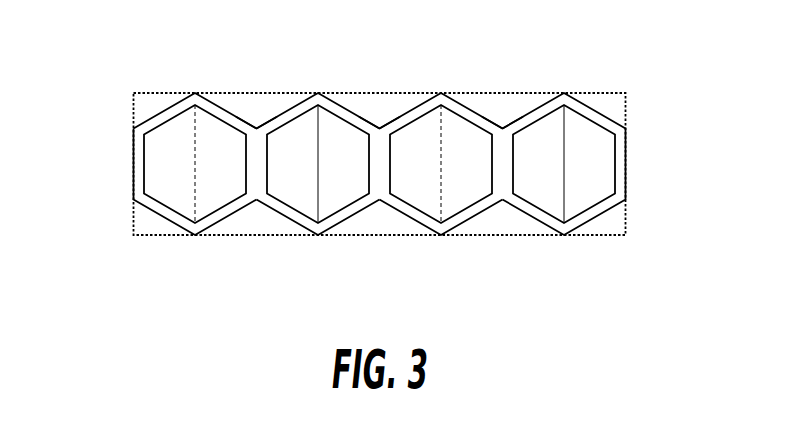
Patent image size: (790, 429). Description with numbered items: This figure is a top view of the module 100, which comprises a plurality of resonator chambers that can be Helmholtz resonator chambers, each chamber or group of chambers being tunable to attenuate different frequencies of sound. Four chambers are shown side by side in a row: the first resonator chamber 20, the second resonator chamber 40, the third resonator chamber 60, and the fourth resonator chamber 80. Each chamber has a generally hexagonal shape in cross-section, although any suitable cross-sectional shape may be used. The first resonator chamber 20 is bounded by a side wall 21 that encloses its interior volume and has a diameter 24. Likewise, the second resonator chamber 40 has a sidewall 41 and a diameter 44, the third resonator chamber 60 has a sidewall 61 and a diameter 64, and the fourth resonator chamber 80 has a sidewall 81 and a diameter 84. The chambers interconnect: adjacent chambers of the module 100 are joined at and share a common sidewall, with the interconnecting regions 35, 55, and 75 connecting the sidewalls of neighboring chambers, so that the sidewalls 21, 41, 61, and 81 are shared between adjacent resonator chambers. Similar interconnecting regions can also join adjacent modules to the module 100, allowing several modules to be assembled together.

The module 100 is at (103, 86).
The first resonator chamber 20 is at (614, 247).
The side wall 21 is at (604, 118).
The diameter 24 is at (571, 171).
The interconnecting region 35 is at (503, 135).
The second resonator chamber 40 is at (464, 247).
The sidewall 41 is at (414, 214).
The diameter 44 is at (450, 196).
The interconnecting region 55 is at (381, 135).
The third resonator chamber 60 is at (339, 247).
The sidewall 61 is at (290, 219).
The diameter 64 is at (327, 134).
The interconnecting region 75 is at (257, 135).
The fourth resonator chamber 80 is at (127, 225).
The sidewall 81 is at (168, 218).
The diameter 84 is at (188, 171).